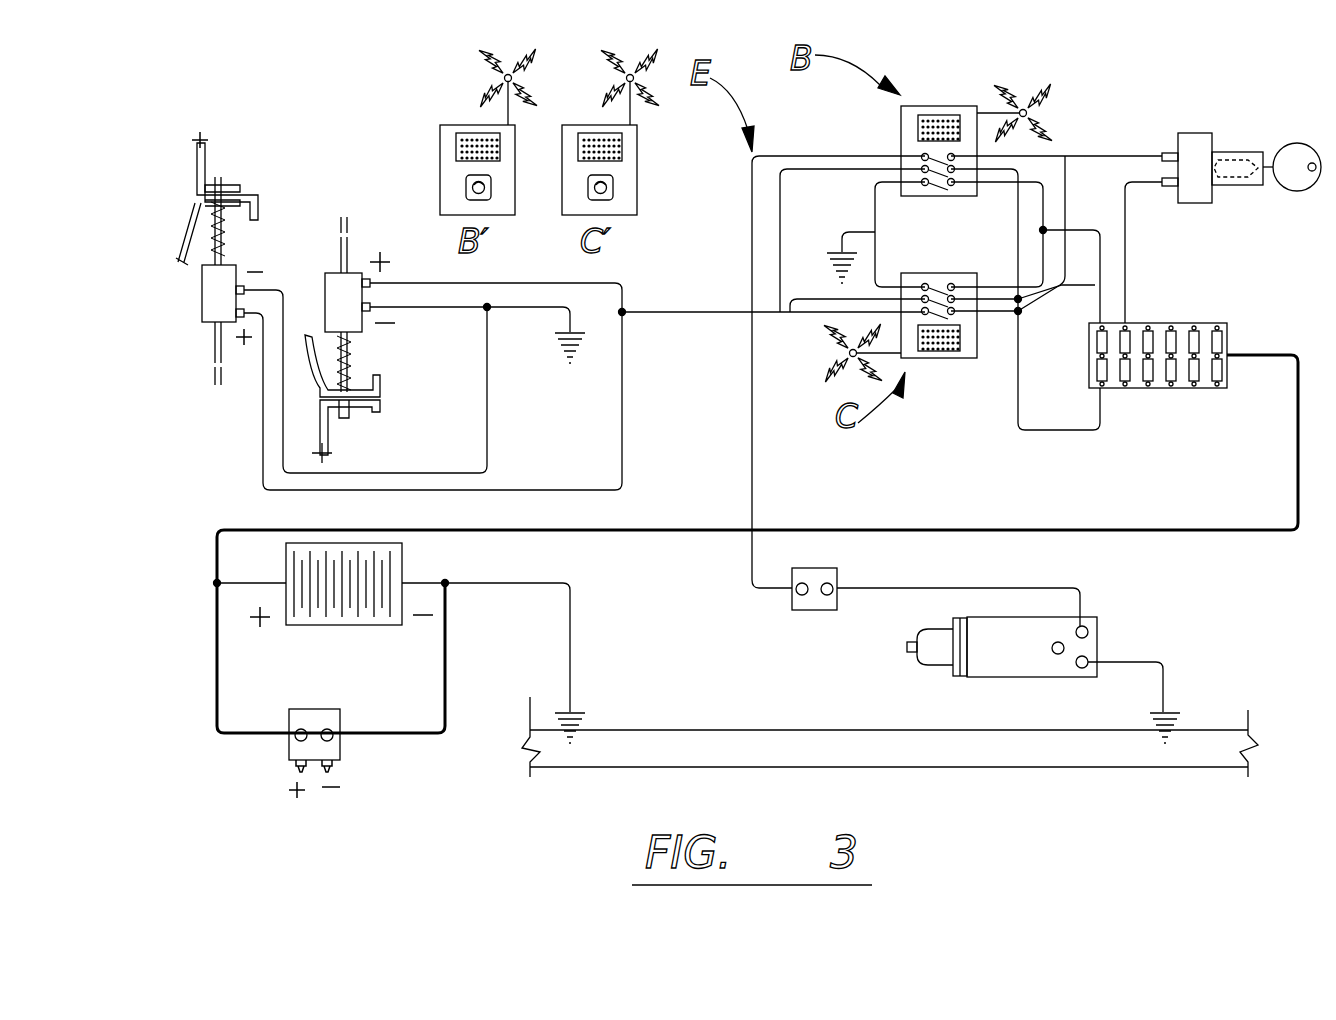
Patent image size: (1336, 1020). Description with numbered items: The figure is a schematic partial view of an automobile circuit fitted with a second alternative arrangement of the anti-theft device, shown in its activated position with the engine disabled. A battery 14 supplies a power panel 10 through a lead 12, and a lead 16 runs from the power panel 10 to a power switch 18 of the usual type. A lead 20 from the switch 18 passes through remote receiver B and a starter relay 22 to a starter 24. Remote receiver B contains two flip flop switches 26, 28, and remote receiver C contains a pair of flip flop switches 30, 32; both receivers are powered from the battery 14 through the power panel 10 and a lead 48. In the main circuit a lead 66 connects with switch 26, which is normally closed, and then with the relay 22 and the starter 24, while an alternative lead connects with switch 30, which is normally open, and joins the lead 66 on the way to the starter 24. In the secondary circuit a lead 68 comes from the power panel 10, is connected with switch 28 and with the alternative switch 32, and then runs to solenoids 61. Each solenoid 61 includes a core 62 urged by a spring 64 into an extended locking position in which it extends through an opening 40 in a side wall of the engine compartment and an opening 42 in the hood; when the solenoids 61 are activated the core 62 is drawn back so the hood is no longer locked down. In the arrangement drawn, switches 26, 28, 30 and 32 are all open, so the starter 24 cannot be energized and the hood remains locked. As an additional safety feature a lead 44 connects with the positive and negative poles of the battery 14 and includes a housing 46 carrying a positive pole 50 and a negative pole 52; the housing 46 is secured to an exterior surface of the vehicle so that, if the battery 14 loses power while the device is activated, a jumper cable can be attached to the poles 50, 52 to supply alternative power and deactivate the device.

The power panel 10 is at (1197, 320).
The lead 12 is at (1295, 515).
The battery 14 is at (322, 625).
The lead 16 is at (1127, 260).
The power switch 18 is at (1212, 133).
The lead 20 is at (918, 588).
The starter relay 22 is at (812, 610).
The starter 24 is at (1040, 668).
The flip flop switch 26 is at (915, 155).
The flip flop switch 28 is at (938, 172).
The flip flop switch 30 is at (940, 290).
The flip flop switch 32 is at (922, 330).
The opening 40 is at (217, 213).
The opening 42 is at (220, 185).
The lead 44 is at (217, 670).
The housing 46 is at (322, 708).
The lead 48 is at (1093, 230).
The positive pole 50 is at (297, 772).
The negative pole 52 is at (330, 770).
The solenoid 61 is at (207, 298).
The core 62 is at (210, 358).
The spring 64 is at (213, 243).
The lead 66 is at (930, 320).
The lead 68 is at (961, 333).